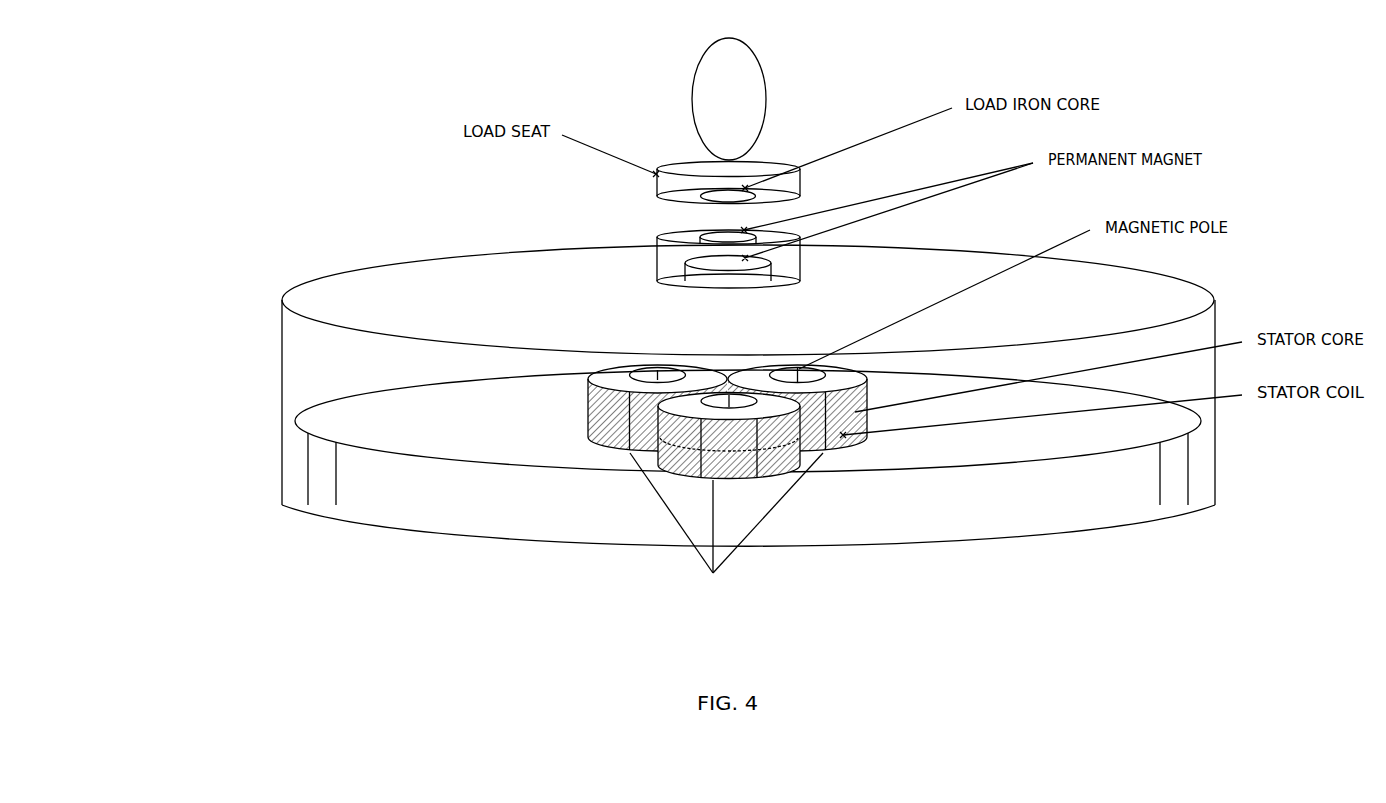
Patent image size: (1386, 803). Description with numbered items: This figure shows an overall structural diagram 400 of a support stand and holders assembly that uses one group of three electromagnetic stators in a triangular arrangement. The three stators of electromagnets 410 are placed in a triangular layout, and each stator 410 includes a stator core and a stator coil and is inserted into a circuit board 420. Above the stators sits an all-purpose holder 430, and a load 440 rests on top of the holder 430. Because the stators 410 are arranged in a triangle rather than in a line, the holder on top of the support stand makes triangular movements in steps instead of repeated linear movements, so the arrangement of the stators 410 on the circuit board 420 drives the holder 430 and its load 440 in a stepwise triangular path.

The motor device 400 is at (748, 293).
The load 440 is at (695, 118).
The all-purpose holder 430 is at (655, 258).
The circuit board 420 is at (362, 422).
The stators of electromagnets 410 is at (727, 500).